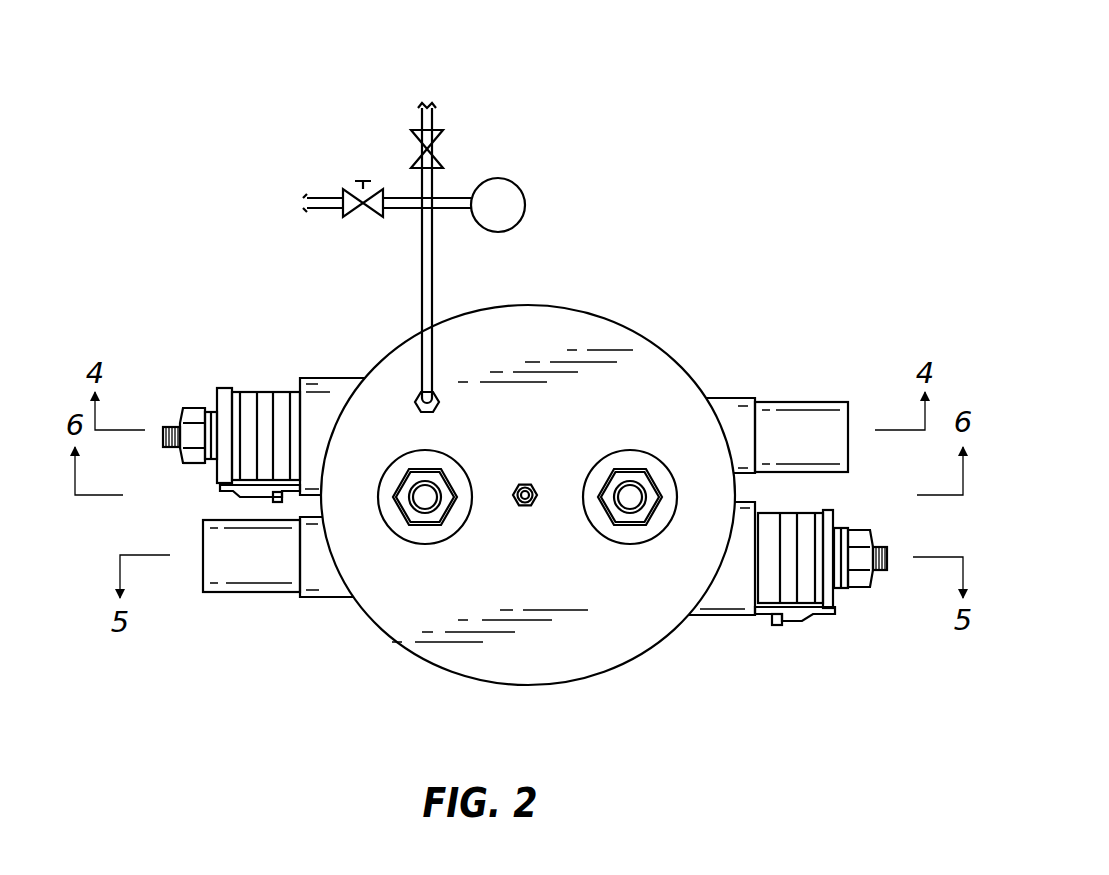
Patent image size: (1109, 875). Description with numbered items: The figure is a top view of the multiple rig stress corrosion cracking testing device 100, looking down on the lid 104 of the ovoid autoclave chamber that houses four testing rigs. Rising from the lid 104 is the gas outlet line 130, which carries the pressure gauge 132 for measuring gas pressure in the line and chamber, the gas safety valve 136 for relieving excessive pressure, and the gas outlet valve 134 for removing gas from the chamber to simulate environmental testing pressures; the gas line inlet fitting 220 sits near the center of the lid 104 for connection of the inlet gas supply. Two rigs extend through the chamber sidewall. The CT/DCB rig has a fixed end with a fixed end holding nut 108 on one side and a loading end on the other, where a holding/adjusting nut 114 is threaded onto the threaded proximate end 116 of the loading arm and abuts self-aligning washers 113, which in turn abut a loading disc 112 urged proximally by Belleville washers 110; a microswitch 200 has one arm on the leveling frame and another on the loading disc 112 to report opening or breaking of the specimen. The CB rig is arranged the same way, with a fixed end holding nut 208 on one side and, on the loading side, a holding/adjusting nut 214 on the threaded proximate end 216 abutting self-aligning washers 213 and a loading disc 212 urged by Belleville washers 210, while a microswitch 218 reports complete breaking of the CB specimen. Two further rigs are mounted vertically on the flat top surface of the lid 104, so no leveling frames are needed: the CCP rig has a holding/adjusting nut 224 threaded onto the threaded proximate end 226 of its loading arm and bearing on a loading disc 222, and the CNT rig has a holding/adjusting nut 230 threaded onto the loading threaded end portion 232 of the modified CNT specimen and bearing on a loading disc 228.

The multiple rig stress corrosion cracking testing device 100 is at (856, 106).
The lid 104 is at (531, 658).
The fixed end holding nut 108 is at (783, 450).
The Belleville washers 110 is at (252, 390).
The loading disc 112 is at (225, 388).
The self-aligning washers 113 is at (207, 408).
The holding/adjusting nut 114 is at (190, 477).
The threaded proximate end 116 is at (167, 427).
The gas outlet line 130 is at (433, 277).
The pressure gauge 132 is at (517, 177).
The gas outlet valve 134 is at (442, 143).
The gas safety valve 136 is at (348, 183).
The microswitch 200 is at (280, 500).
The fixed end holding nut 208 is at (228, 563).
The Belleville washers 210 is at (790, 513).
The loading disc 212 is at (840, 605).
The self-aligning washers 213 is at (848, 527).
The holding/adjusting nut 214 is at (863, 590).
The threaded proximate end 216 is at (880, 570).
The microswitch 218 is at (775, 623).
The gas line inlet fitting 220 is at (537, 500).
The loading disc 222 is at (458, 482).
The holding/adjusting nut 224 is at (403, 485).
The threaded proximate end 226 is at (423, 503).
The loading disc 228 is at (603, 470).
The holding/adjusting nut 230 is at (628, 470).
The loading threaded end portion 232 is at (630, 500).